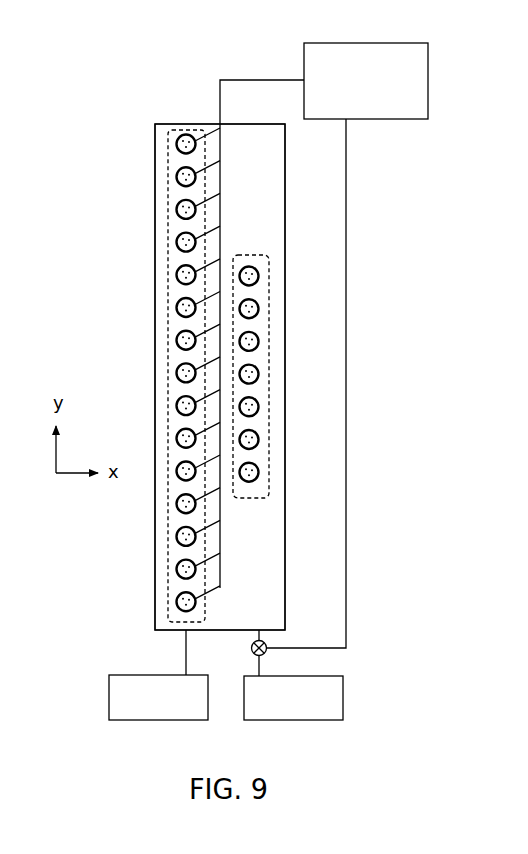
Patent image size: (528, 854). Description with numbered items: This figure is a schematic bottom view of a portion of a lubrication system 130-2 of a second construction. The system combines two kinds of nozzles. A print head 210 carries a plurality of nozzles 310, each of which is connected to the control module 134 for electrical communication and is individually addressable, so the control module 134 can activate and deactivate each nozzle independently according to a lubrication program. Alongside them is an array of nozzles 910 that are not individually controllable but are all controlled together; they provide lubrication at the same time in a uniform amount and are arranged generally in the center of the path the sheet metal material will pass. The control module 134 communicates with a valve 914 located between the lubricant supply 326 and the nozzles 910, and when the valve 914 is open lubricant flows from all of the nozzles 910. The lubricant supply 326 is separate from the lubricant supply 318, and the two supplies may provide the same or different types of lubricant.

The lubrication system 130-2 is at (156, 74).
The control module 134 is at (428, 72).
The print head 210 is at (150, 305).
The nozzles 310 is at (177, 205).
The array of nozzles 910 is at (259, 272).
The valve 914 is at (266, 651).
The lubricant supply 318 is at (109, 700).
The lubricant supply 326 is at (343, 695).